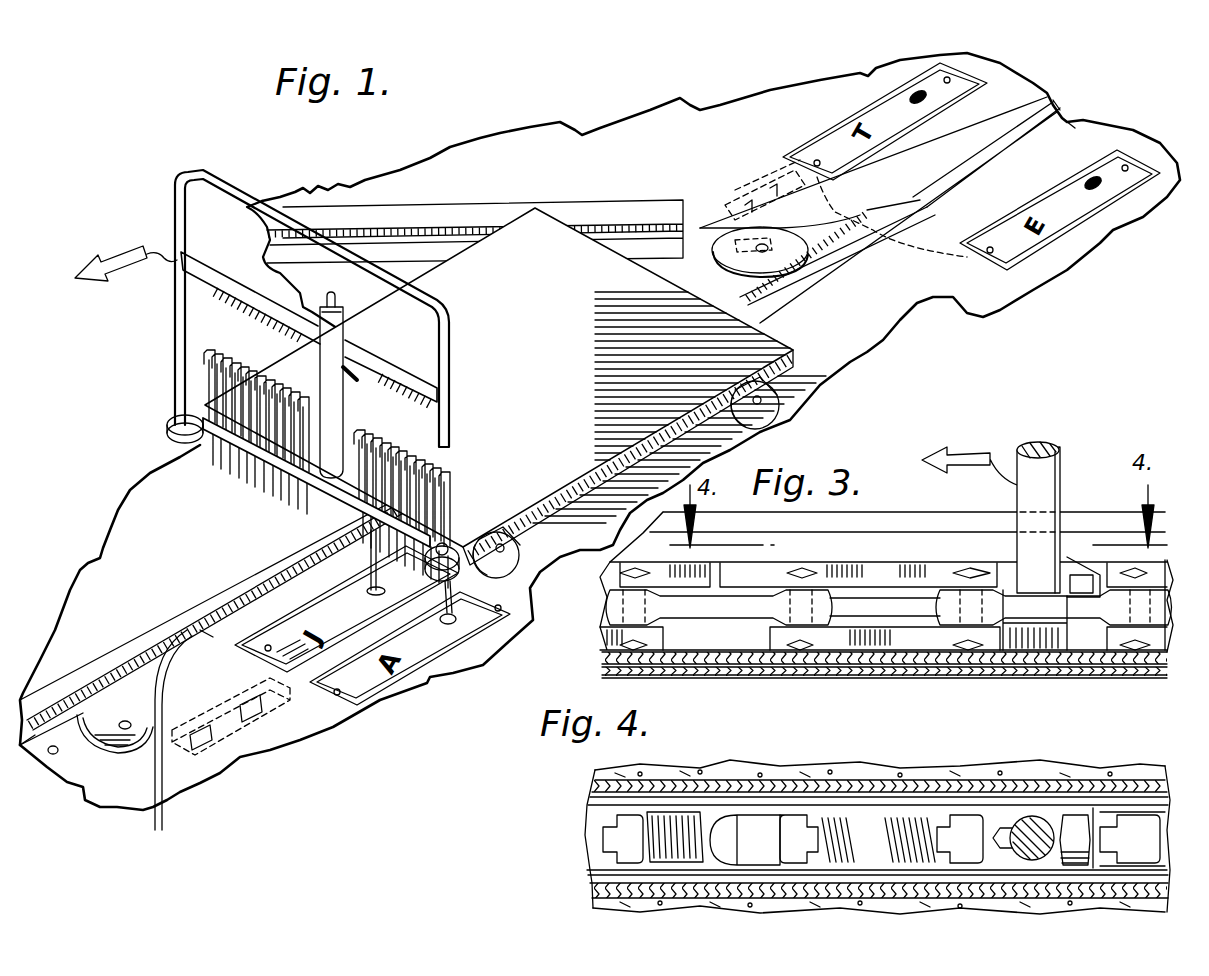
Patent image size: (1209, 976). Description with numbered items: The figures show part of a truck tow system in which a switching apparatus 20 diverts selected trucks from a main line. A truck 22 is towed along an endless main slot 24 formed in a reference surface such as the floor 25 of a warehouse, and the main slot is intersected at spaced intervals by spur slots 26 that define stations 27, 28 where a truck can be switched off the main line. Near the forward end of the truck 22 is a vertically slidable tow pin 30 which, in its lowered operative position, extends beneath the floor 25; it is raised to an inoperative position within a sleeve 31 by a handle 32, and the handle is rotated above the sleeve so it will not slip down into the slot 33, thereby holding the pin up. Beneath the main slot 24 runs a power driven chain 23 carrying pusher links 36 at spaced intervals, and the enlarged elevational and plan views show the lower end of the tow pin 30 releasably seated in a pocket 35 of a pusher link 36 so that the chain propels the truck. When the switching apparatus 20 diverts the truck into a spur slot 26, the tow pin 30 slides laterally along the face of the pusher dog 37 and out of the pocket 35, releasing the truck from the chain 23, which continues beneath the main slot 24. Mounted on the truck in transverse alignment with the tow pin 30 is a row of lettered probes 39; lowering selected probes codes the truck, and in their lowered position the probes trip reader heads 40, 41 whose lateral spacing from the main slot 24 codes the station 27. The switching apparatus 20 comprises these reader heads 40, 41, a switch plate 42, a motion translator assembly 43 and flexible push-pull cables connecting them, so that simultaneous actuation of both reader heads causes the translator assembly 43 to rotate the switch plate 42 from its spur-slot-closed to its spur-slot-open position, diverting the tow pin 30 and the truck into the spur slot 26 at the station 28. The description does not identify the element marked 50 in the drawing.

In FIG. 1, the switching apparatus 20 is at (300, 760).
In FIG. 1, the truck 22 is at (533, 268).
In FIG. 3, the chain 23 is at (1160, 645).
In FIG. 4, the chain 23 is at (1155, 808).
In FIG. 1, the main slot 24 is at (1067, 117).
In FIG. 1, the floor 25 is at (110, 566).
In FIG. 3, the floor 25 is at (935, 497).
In FIG. 1, the spur slot 26 is at (712, 240).
In FIG. 1, the station 27 is at (130, 648).
In FIG. 1, the station 28 is at (830, 275).
In FIG. 1, the tow pin 30 is at (315, 505).
In FIG. 3, the tow pin 30 is at (1040, 487).
In FIG. 4, the tow pin 30 is at (1028, 815).
In FIG. 1, the sleeve 31 is at (337, 407).
In FIG. 1, the handle 32 is at (348, 372).
In FIG. 1, the slot 33 is at (343, 328).
In FIG. 3, the pocket 35 is at (1005, 575).
In FIG. 4, the pocket 35 is at (997, 815).
In FIG. 3, the pusher link 36 is at (1037, 630).
In FIG. 3, the pusher dog 37 is at (1075, 545).
In FIG. 4, the pusher dog 37 is at (1075, 812).
In FIG. 1, the probes 39 is at (233, 480).
In FIG. 1, the reader head 40 is at (458, 625).
In FIG. 1, the reader head 41 is at (373, 594).
In FIG. 1, the switch plate 42 is at (117, 703).
In FIG. 1, the motion translator assembly 43 is at (197, 713).
In FIG. 1, the base plate 50 is at (380, 702).